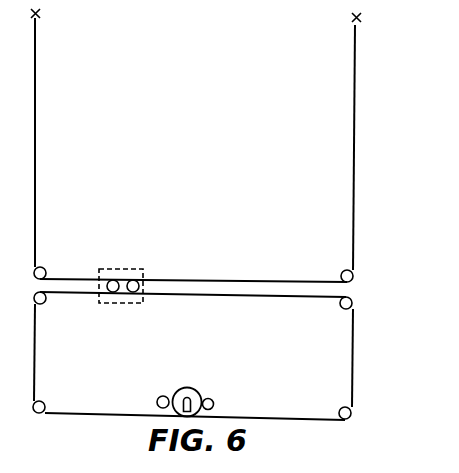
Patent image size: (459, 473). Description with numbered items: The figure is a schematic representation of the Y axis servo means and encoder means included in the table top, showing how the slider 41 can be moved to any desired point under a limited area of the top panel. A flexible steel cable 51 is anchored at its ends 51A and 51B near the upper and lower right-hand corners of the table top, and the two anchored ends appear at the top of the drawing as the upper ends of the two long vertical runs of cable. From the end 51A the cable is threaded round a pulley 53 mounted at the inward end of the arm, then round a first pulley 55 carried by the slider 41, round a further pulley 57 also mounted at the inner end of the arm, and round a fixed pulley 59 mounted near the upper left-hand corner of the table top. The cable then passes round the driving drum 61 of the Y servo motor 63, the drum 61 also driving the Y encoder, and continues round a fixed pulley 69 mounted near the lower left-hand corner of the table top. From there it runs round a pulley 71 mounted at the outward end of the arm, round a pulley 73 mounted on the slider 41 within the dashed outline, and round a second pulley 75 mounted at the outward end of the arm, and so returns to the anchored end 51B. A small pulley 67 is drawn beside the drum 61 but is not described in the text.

The slider 41 is at (145, 270).
The flexible steel cable 51 is at (39, 133).
The cable end 51A is at (57, 14).
The cable end 51B is at (377, 20).
The pulley 53 is at (41, 265).
The first pulley 55 is at (116, 276).
The further pulley 57 is at (45, 307).
The fixed pulley 59 is at (43, 400).
The driving drum 61 is at (192, 385).
The Y servo motor 63 is at (161, 393).
The pulley 67 is at (210, 397).
The fixed pulley 69 is at (342, 404).
The pulley 71 is at (341, 311).
The pulley 73 is at (130, 298).
The second pulley 75 is at (345, 266).